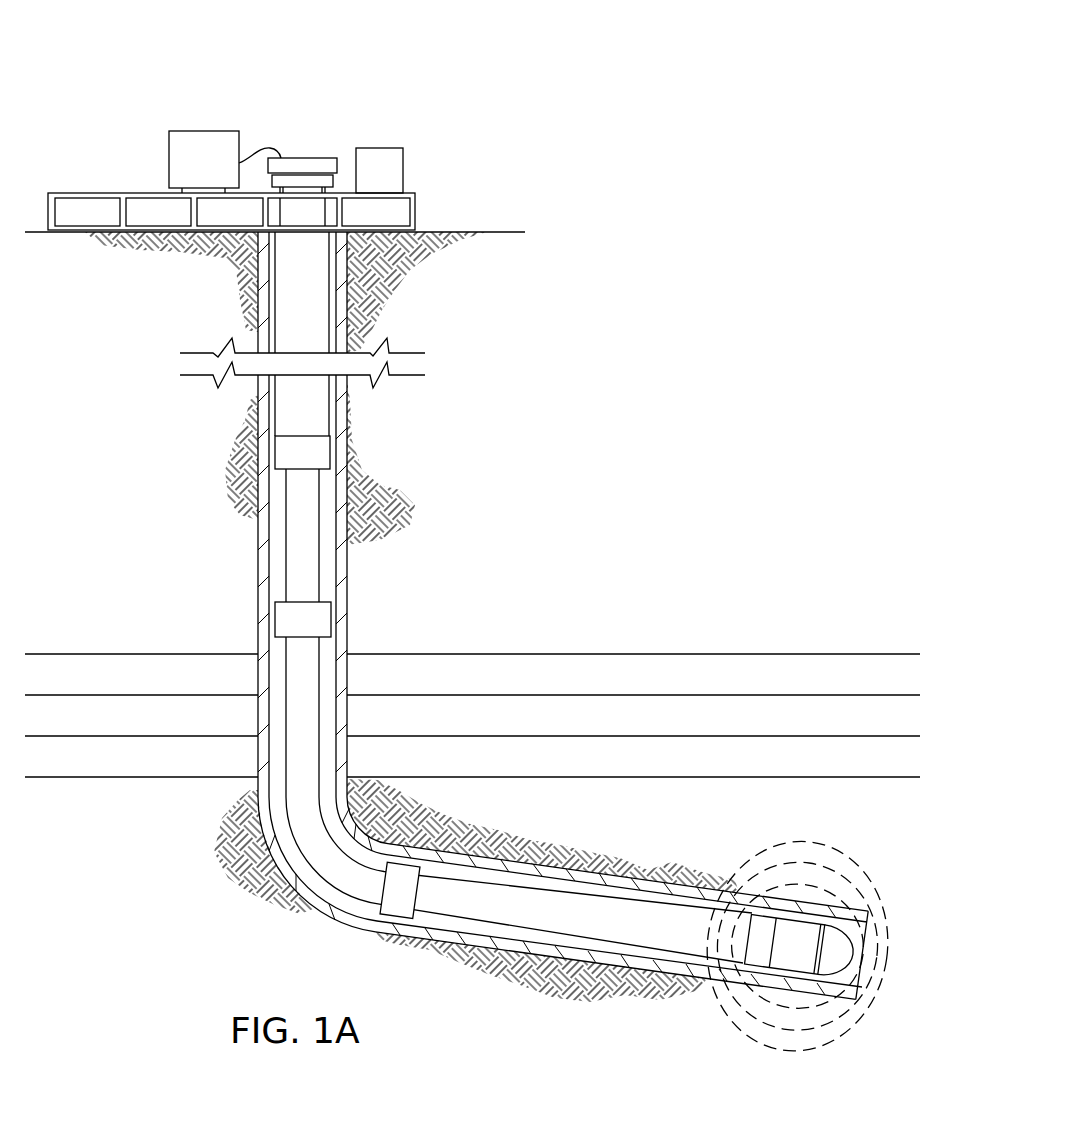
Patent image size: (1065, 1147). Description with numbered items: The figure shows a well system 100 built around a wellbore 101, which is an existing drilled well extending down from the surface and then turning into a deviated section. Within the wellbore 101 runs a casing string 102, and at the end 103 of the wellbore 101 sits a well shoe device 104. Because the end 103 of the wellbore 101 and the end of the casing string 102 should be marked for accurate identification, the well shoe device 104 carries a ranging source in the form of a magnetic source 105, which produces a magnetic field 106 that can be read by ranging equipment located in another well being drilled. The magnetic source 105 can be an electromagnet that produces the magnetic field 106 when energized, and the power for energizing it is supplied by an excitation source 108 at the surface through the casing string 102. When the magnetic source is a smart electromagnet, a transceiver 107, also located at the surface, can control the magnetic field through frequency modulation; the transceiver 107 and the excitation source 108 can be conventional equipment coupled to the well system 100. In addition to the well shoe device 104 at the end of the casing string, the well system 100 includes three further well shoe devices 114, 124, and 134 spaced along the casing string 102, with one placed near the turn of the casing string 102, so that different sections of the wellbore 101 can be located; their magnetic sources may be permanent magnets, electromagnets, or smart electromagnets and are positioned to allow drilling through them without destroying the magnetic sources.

The well system 100 is at (265, 64).
The wellbore 101 is at (280, 575).
The casing string 102 is at (518, 924).
The end of the wellbore 103 is at (870, 962).
The well shoe device 104 is at (738, 938).
The magnetic source 105 is at (784, 984).
The magnetic field 106 is at (853, 839).
The transceiver 107 is at (383, 148).
The excitation source 108 is at (203, 131).
The well shoe device 114 is at (330, 451).
The well shoe device 124 is at (286, 617).
The well shoe device 134 is at (397, 905).